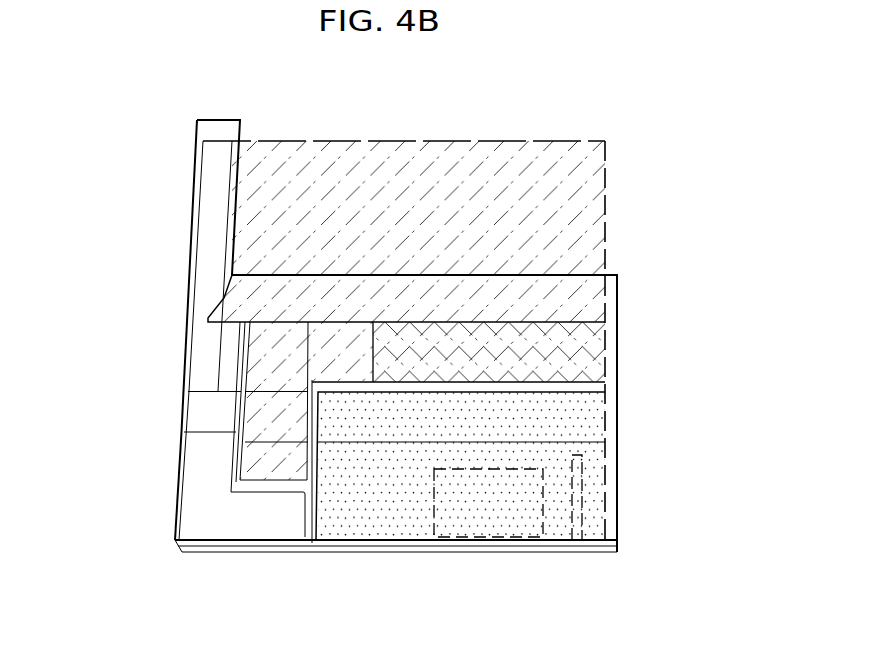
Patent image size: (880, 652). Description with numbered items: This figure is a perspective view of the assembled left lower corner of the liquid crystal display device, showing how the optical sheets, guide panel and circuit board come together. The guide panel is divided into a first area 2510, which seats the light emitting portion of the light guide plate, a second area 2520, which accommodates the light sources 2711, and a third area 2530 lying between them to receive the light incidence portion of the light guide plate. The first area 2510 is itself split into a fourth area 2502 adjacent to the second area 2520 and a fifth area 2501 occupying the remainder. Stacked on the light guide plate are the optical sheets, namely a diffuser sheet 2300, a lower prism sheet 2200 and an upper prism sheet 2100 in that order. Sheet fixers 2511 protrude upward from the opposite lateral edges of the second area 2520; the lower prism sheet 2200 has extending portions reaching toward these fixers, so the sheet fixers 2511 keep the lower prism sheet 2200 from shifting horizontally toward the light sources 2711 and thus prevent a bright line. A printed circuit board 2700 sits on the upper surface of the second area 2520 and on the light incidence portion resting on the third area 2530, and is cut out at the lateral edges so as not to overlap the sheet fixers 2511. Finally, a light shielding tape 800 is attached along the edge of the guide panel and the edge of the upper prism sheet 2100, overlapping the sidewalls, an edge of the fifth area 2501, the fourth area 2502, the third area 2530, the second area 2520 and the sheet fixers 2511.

The upper prism sheet 2100 is at (568, 251).
The light shielding tape 800 is at (617, 289).
The lower prism sheet 2200 is at (325, 342).
The diffuser sheet 2300 is at (566, 355).
The printed circuit board 2700 is at (566, 417).
The light sources 2711 is at (508, 537).
The sheet fixers 2511 is at (207, 523).
The first area 2510 is at (114, 237).
The fifth area 2501 is at (186, 143).
The fourth area 2502 is at (181, 324).
The third area 2530 is at (176, 393).
The second area 2520 is at (172, 434).